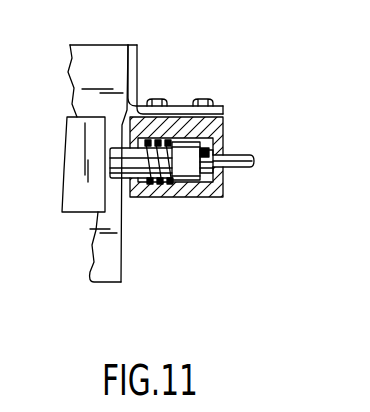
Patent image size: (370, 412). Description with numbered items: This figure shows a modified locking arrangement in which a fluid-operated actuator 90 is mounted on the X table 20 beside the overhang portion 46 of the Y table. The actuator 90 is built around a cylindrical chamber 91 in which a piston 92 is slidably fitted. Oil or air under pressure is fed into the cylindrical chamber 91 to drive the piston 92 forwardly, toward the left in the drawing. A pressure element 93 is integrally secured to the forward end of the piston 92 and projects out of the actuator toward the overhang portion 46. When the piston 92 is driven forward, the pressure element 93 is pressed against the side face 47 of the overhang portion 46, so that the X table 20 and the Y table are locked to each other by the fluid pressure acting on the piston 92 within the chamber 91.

The X table 20 is at (110, 45).
The side face 47 is at (109, 120).
The overhang portion 46 is at (78, 117).
The piston 92 is at (183, 197).
The pressure element 93 is at (107, 186).
The cylindrical chamber 91 is at (198, 151).
The fluid-operated actuator 90 is at (225, 162).